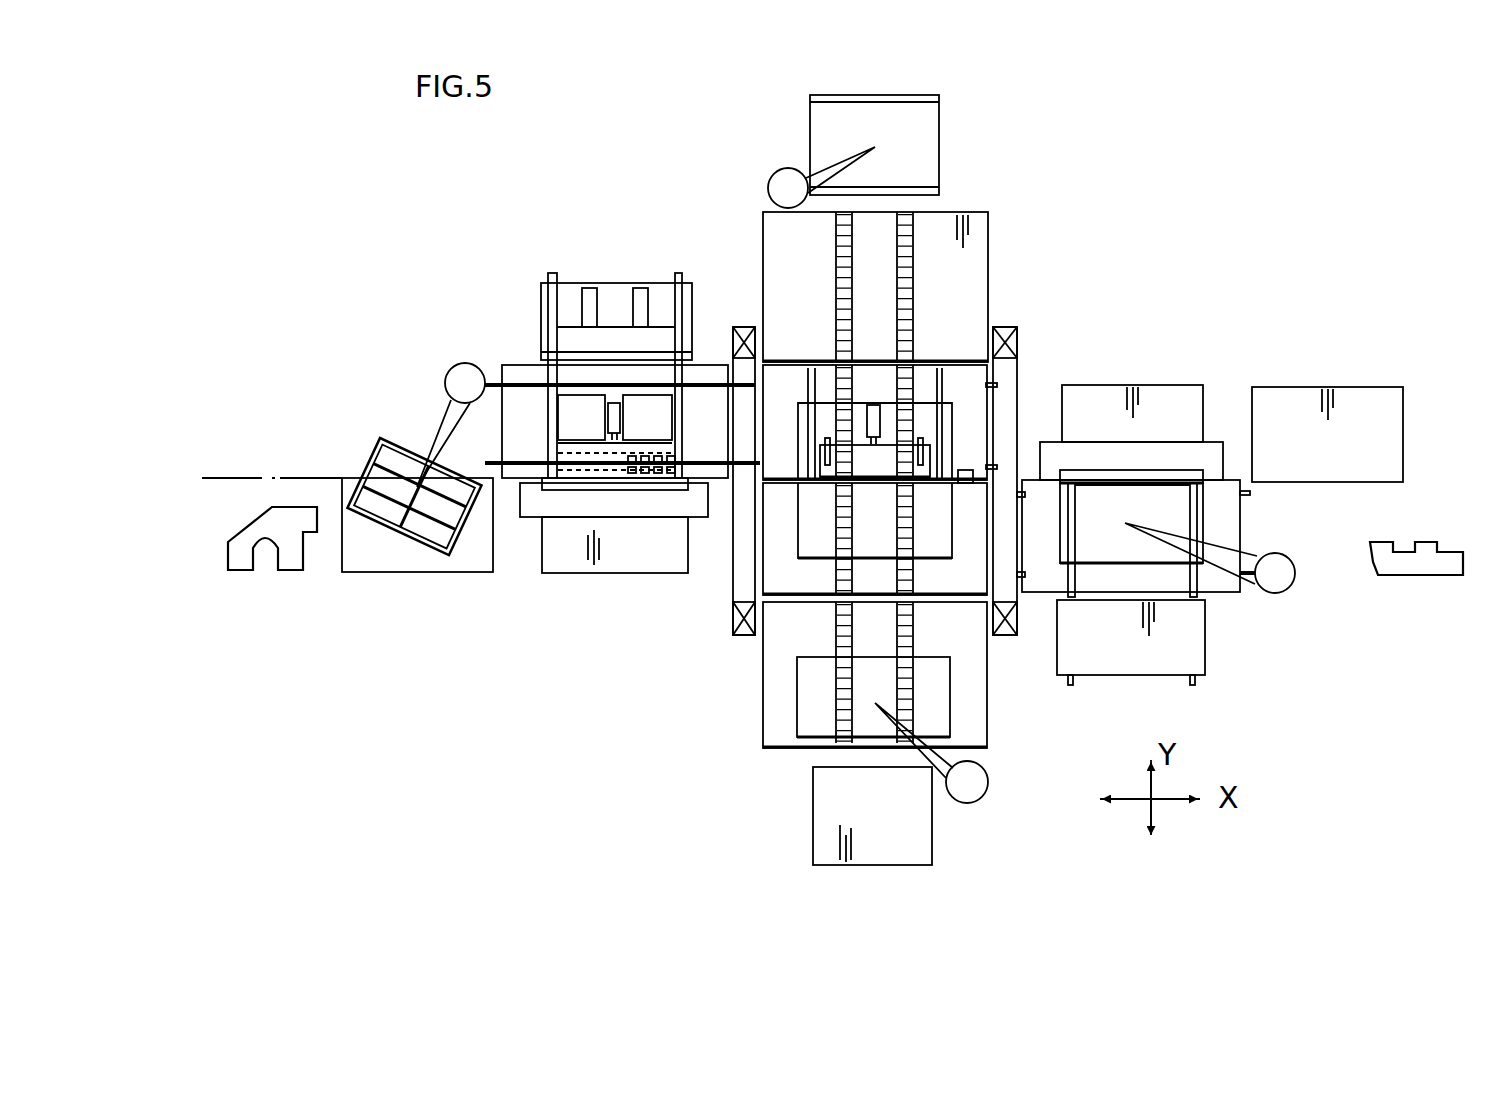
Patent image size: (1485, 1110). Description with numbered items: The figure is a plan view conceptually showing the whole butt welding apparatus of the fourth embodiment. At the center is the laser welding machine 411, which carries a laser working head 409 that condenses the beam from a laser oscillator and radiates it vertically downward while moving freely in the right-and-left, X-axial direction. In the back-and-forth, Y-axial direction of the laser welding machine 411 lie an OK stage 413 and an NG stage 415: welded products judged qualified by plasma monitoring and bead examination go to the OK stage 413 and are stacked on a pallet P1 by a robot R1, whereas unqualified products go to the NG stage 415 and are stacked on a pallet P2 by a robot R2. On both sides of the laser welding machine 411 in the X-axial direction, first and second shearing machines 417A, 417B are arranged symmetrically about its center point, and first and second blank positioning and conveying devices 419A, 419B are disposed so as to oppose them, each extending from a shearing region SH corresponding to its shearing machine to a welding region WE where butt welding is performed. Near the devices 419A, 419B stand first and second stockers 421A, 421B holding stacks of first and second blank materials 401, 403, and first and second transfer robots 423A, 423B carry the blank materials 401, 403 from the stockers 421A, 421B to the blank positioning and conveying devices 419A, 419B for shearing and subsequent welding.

The first blank material 401 is at (247, 525).
The second blank material 403 is at (1430, 578).
The laser working head 409 is at (968, 468).
The laser welding machine 411 is at (960, 506).
The OK stage 413 is at (987, 285).
The NG stage 415 is at (988, 725).
The first shearing machine 417A is at (613, 578).
The second shearing machine 417B is at (1162, 383).
The first blank positioning and conveying device 419A is at (533, 305).
The second blank positioning and conveying device 419B is at (1219, 605).
The first stocker 421A is at (412, 577).
The second stocker 421B is at (1337, 385).
The first transfer robot 423A is at (437, 422).
The second transfer robot 423B is at (1252, 553).
The welding region WE is at (782, 388).
The shearing region SH is at (583, 500).
The robot R1 is at (838, 156).
The robot R2 is at (940, 778).
The pallet P1 is at (913, 95).
The pallet P2 is at (878, 866).